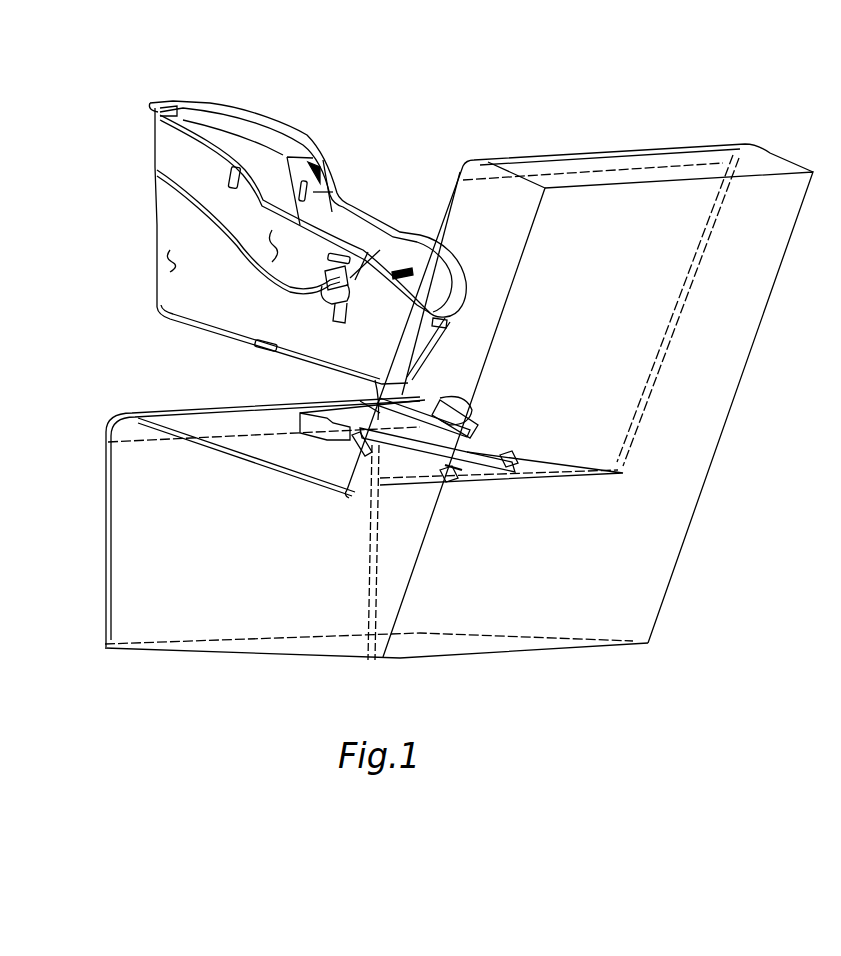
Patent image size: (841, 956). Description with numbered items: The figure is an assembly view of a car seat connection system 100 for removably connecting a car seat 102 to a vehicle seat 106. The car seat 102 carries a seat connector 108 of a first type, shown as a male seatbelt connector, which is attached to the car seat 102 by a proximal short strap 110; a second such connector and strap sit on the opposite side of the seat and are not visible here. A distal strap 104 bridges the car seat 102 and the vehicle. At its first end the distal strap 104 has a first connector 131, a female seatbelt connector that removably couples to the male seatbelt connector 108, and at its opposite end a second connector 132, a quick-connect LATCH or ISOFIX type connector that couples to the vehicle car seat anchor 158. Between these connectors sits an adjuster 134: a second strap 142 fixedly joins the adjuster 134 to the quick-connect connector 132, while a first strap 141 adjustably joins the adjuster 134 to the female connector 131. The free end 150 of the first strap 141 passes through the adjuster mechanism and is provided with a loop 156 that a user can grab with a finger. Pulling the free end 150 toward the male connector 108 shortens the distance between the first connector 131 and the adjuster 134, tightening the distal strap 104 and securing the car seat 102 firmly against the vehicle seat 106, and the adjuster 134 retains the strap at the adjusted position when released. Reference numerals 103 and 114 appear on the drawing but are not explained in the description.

The car seat connection system 100 is at (117, 92).
The car seat 102 is at (282, 120).
The seat shell 103 is at (168, 261).
The distal strap 104 is at (313, 498).
The vehicle seat 106 is at (542, 555).
The seat connector 108 is at (323, 311).
The proximal strap 110 is at (323, 281).
The seat pad 114 is at (272, 243).
The first connector 131 is at (365, 437).
The second connector 132 is at (507, 467).
The adjuster 134 is at (377, 447).
The first strap 141 is at (357, 430).
The second strap 142 is at (405, 455).
The free end 150 is at (295, 447).
The loop 156 is at (447, 407).
The car seat anchor 158 is at (450, 475).